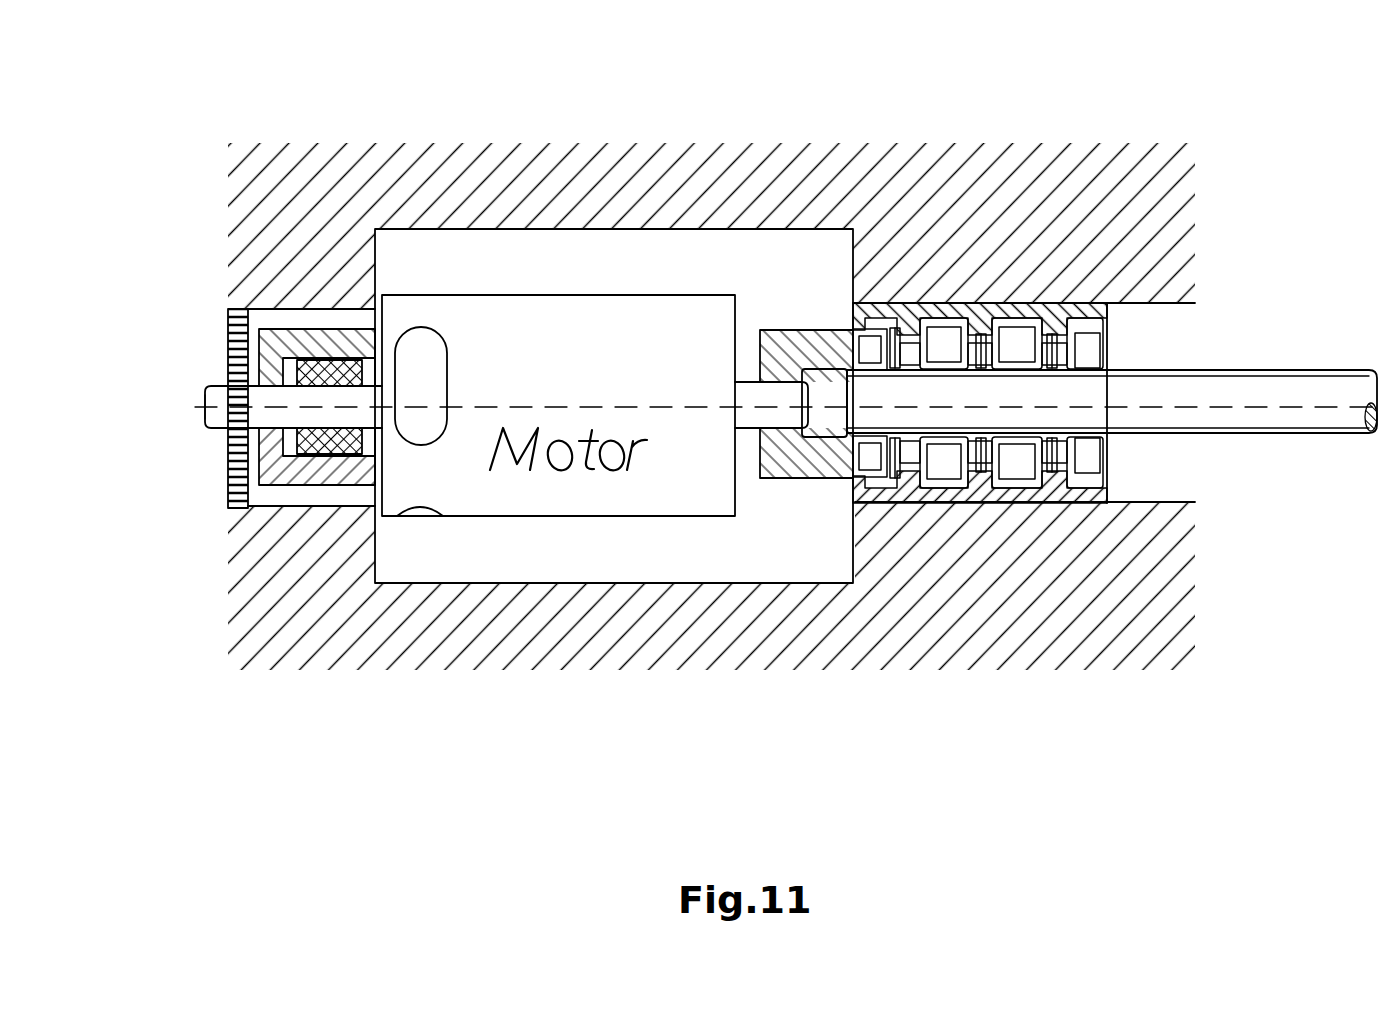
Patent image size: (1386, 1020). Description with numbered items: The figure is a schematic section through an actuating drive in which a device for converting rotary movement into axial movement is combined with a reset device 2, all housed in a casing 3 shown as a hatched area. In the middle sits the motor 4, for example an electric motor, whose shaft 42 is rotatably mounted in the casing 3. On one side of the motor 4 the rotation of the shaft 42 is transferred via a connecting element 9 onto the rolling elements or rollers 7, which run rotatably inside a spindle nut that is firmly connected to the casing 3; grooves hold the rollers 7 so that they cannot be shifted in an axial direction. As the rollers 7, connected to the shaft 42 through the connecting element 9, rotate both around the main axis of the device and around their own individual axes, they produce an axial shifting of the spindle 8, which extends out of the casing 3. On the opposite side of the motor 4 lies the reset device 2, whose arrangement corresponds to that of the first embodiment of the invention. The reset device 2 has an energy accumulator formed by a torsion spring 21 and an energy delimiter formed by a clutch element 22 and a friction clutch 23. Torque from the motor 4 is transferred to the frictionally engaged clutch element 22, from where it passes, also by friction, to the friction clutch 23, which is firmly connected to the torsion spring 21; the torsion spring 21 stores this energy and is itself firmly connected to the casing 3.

The reset device 2 is at (155, 478).
The casing 3 is at (352, 157).
The motor 4 is at (517, 502).
The rolling elements or rollers 7 is at (1105, 453).
The spindle 8 is at (1297, 390).
The connecting element 9 is at (815, 463).
The torsion spring 21 is at (228, 326).
The clutch element 22 is at (305, 443).
The friction clutch 23 is at (302, 338).
The shaft 42 is at (747, 392).